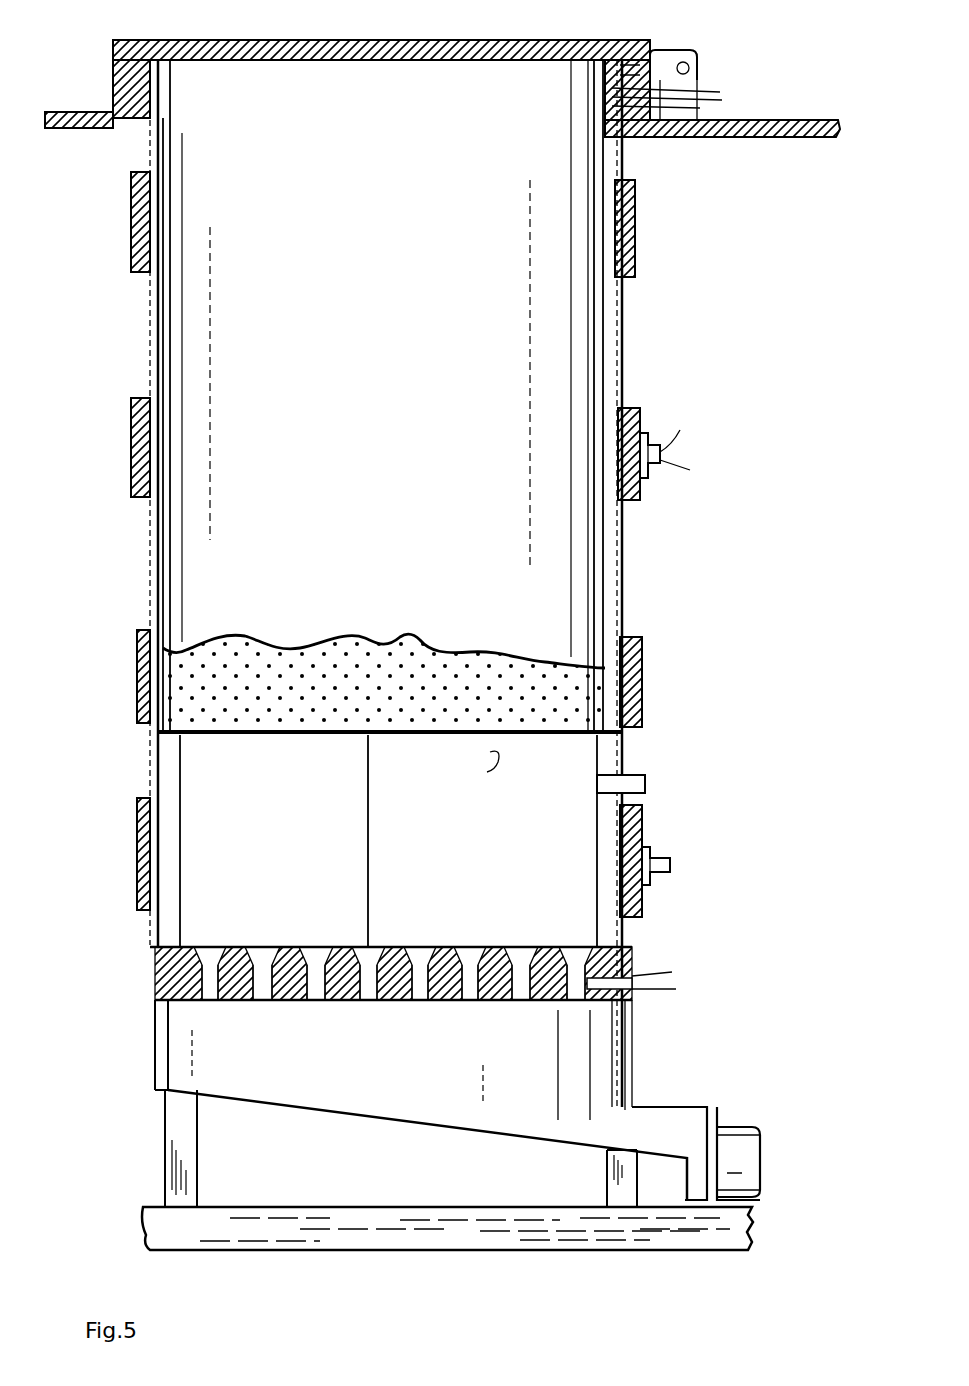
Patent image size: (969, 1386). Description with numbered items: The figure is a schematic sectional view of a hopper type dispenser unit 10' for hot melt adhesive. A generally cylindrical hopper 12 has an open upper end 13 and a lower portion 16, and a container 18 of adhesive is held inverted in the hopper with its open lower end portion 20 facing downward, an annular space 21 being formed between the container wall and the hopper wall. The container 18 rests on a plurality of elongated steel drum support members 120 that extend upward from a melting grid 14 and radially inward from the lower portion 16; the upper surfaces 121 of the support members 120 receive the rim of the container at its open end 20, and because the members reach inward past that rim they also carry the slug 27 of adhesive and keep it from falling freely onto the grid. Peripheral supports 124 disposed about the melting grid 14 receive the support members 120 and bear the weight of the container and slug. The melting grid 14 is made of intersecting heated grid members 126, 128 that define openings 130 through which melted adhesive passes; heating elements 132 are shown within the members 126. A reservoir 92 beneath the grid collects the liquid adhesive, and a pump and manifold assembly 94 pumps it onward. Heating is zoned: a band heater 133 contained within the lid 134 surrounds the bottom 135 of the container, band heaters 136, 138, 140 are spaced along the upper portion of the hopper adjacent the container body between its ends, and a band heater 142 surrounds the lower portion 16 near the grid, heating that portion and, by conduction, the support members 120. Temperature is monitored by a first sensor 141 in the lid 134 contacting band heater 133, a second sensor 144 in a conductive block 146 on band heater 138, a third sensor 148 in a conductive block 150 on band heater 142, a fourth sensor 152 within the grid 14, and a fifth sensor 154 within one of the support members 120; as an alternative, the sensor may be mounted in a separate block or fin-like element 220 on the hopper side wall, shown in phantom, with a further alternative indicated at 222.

The bottom of the inverted container 135 is at (230, 70).
The lid 134 is at (622, 62).
The band heater 133 is at (665, 50).
The open upper end 13 is at (800, 122).
The first temperature sensor 141 is at (640, 130).
The melting grid 14 is at (624, 170).
The hopper 12 is at (634, 330).
The annular space 21 is at (152, 362).
The container 18 is at (465, 333).
The hopper type dispenser unit 10' is at (783, 268).
The open lower end portion 20 is at (152, 740).
The band heater 136 is at (640, 238).
The band heater 138 is at (648, 410).
The second temperature sensor 144 is at (655, 468).
The conductive block 146 is at (652, 456).
The band heater 140 is at (644, 668).
The band heater 142 is at (645, 842).
The third temperature sensor 148 is at (672, 852).
The conductive block 150 is at (700, 882).
The slug of adhesive 27 is at (392, 690).
The upper surfaces of support members 121 is at (165, 727).
The drum support members 120 is at (172, 794).
The lower portion of hopper 16 is at (624, 758).
The fifth temperature sensor 154 is at (682, 770).
The separate block or fin-like element 220 is at (487, 780).
The probe 222 is at (551, 738).
The peripheral supports 124 is at (165, 972).
The heated grid members 126 is at (378, 1002).
The heated grid members 128 is at (313, 968).
The openings 130 is at (262, 1002).
The heating elements 132 is at (525, 1002).
The fourth temperature sensor 152 is at (636, 997).
The reservoir 92 is at (634, 1052).
The pump and manifold assembly 94 is at (728, 1125).